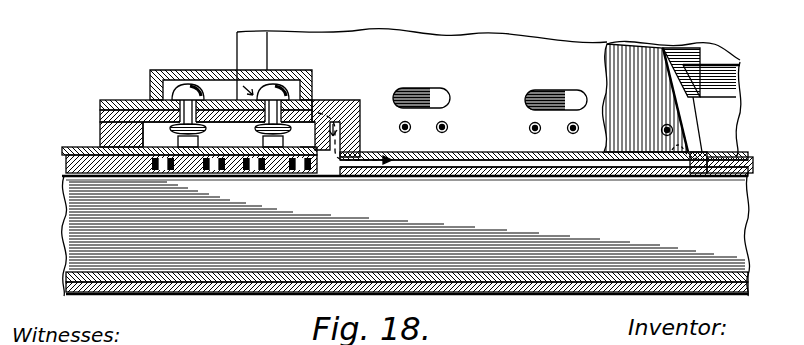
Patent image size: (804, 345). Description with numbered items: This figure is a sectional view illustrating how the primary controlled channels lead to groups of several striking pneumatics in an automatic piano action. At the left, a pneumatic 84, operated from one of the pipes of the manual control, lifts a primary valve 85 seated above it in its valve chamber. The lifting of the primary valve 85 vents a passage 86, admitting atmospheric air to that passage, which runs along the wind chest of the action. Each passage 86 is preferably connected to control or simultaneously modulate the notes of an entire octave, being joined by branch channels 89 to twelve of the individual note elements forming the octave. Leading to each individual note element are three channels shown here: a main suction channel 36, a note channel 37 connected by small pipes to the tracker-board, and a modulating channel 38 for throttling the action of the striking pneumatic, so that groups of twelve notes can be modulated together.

The main suction channel 36 is at (447, 100).
The note channel 37 is at (401, 128).
The modulating channel 38 is at (449, 128).
The pneumatic 84 is at (175, 146).
The primary valve 85 is at (187, 98).
The passage 86 is at (308, 112).
The branch channel 89 is at (725, 78).